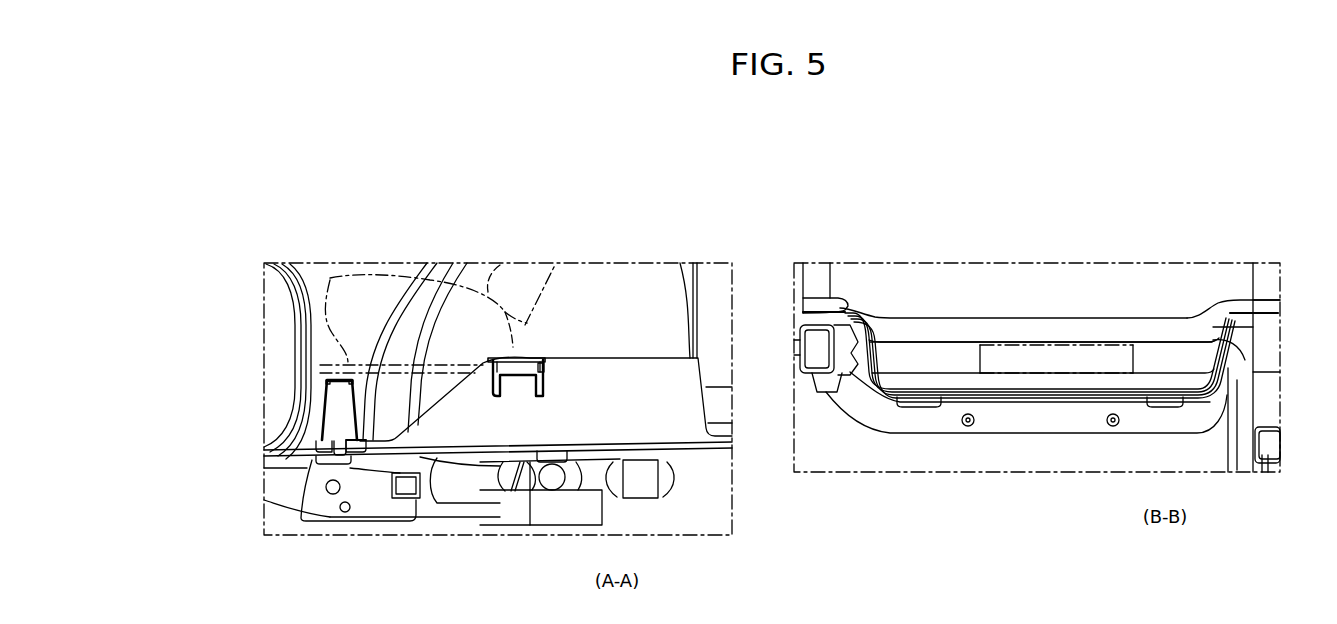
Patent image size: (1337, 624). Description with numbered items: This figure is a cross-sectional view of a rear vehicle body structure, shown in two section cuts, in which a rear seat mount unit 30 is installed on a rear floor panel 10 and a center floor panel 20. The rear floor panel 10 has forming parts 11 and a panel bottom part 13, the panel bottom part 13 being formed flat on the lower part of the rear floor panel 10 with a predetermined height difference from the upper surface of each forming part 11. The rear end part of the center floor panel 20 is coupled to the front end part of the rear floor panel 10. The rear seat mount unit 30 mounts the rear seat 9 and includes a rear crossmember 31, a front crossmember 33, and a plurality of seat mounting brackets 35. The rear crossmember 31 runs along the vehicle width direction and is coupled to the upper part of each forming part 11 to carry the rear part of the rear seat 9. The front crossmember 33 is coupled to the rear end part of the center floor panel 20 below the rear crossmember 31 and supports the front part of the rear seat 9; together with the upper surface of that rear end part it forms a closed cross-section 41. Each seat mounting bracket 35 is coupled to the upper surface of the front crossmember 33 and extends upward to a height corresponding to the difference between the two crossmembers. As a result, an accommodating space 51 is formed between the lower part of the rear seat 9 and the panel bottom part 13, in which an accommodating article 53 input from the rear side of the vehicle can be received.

The rear seat 9 is at (396, 278).
The rear floor panel 10 is at (704, 361).
The forming part 11 is at (619, 358).
The panel bottom part 13 is at (952, 392).
The center floor panel 20 is at (310, 463).
The rear seat mount unit 30 is at (318, 419).
The rear crossmember 31 is at (541, 384).
The front crossmember 33 is at (364, 448).
The seat mounting bracket 35 is at (334, 398).
The closed cross-section 41 is at (346, 457).
The accommodating space 51 is at (916, 354).
The accommodating article 53 is at (1020, 377).